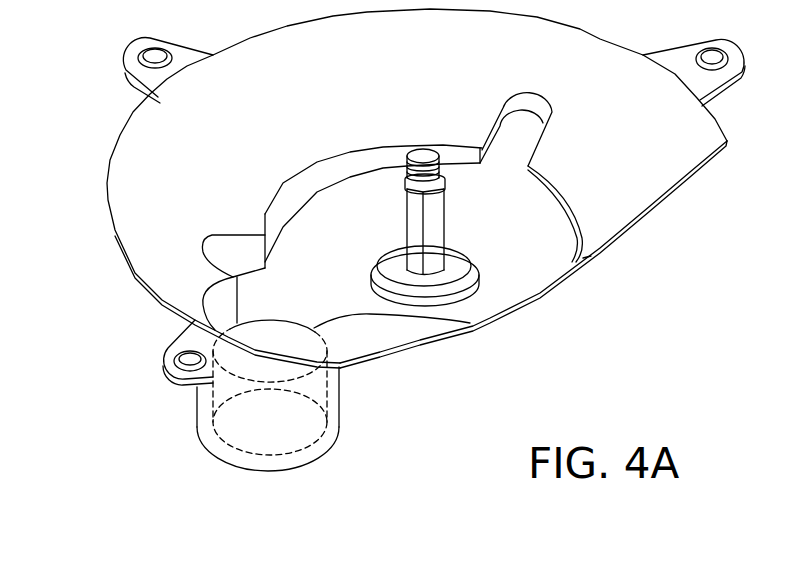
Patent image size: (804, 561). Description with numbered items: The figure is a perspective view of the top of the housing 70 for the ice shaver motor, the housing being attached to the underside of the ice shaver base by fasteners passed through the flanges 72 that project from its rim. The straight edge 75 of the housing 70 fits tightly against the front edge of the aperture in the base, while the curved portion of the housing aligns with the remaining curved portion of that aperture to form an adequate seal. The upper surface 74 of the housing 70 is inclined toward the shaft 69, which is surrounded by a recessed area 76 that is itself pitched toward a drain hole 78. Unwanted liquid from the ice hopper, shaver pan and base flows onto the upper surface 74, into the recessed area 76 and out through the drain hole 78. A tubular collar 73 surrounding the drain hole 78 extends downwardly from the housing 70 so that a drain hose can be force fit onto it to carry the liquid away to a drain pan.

The shaft 69 is at (423, 152).
The housing 70 is at (131, 277).
The flanges 72 is at (183, 60).
The tubular collar 73 is at (342, 398).
The upper surface 74 is at (644, 151).
The edge 75 is at (648, 220).
The recessed area 76 is at (540, 249).
The drain hole 78 is at (275, 328).